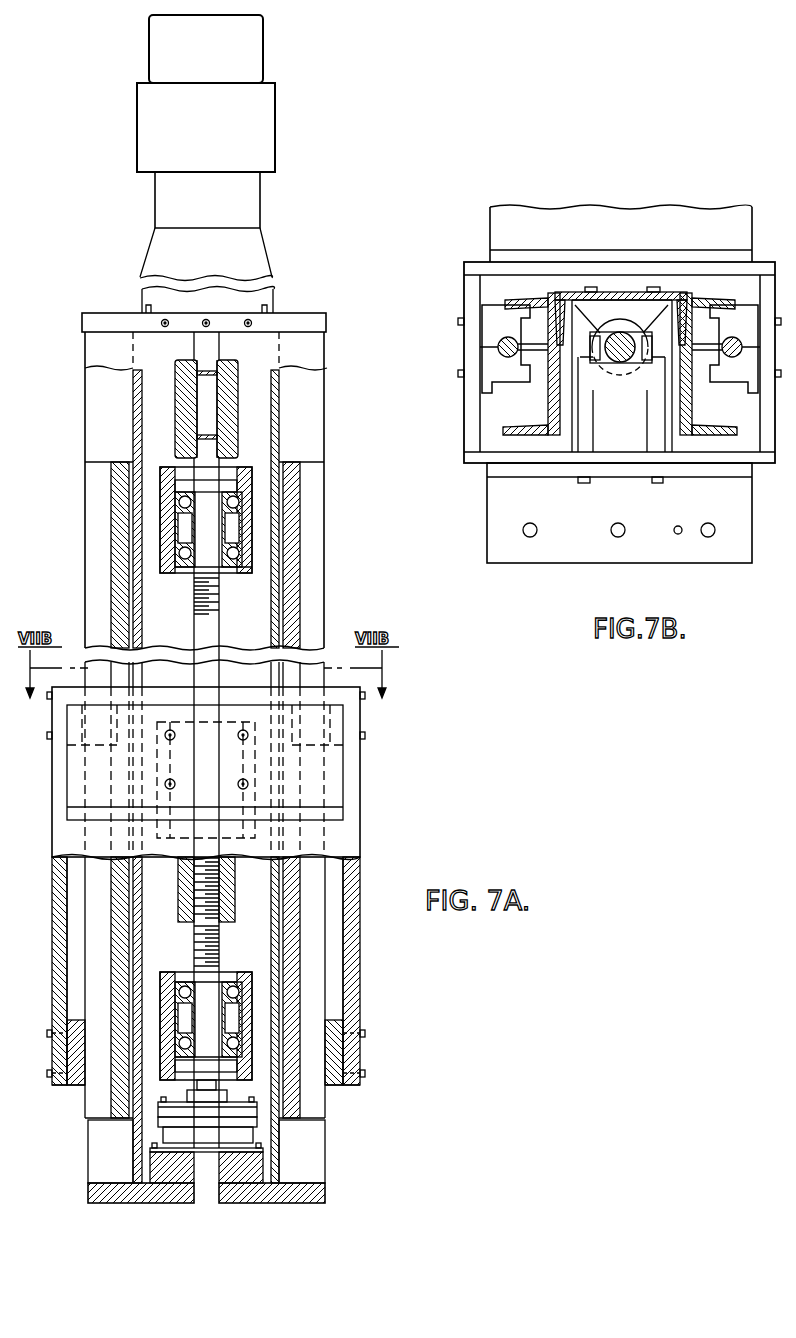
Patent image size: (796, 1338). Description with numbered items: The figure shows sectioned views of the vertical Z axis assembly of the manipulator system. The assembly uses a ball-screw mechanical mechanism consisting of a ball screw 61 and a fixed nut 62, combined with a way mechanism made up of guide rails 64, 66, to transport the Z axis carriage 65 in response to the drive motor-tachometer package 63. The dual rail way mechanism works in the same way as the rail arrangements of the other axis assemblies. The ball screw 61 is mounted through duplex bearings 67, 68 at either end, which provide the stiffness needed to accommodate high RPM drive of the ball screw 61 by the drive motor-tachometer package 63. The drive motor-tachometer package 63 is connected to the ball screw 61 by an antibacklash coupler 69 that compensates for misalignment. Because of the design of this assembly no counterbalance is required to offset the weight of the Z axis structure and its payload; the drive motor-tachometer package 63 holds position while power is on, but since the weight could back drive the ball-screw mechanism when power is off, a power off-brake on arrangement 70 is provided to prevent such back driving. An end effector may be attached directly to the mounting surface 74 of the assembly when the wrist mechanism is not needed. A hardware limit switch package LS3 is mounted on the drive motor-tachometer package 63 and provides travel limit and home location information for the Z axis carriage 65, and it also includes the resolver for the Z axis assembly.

In FIG. 7A, the hardware limit switch package LS3 is at (255, 52).
In FIG. 7A, the drive motor-tachometer package 63 is at (250, 202).
In FIG. 7A, the guide rail 64 is at (95, 506).
In FIG. 7B, the guide rail 64 is at (522, 360).
In FIG. 7A, the guide rail 66 is at (312, 597).
In FIG. 7B, the guide rail 66 is at (724, 360).
In FIG. 7A, the ball screw 61 is at (206, 625).
In FIG. 7B, the ball screw 61 is at (616, 362).
In FIG. 7A, the antibacklash coupler 69 is at (230, 411).
In FIG. 7A, the duplex bearing 67 is at (231, 559).
In FIG. 7A, the Z axis carriage 65 is at (350, 806).
In FIG. 7A, the fixed nut 62 is at (176, 863).
In FIG. 7B, the fixed nut 62 is at (640, 374).
In FIG. 7A, the duplex bearing 68 is at (224, 987).
In FIG. 7A, the power off-brake on arrangement 70 is at (240, 1132).
In FIG. 7A, the mounting surface 74 is at (300, 1206).